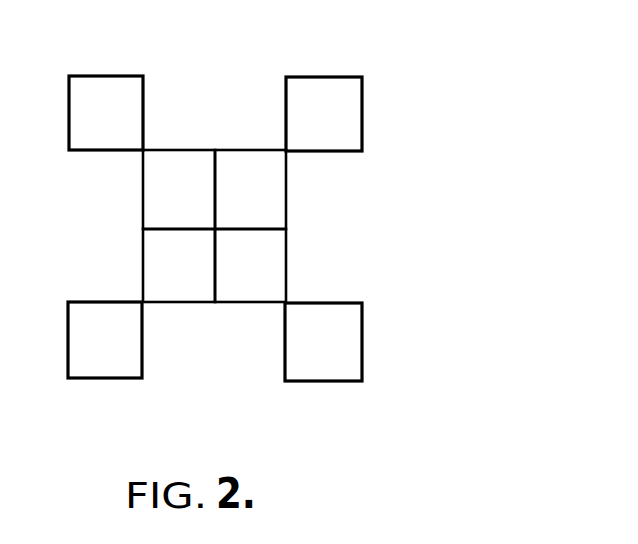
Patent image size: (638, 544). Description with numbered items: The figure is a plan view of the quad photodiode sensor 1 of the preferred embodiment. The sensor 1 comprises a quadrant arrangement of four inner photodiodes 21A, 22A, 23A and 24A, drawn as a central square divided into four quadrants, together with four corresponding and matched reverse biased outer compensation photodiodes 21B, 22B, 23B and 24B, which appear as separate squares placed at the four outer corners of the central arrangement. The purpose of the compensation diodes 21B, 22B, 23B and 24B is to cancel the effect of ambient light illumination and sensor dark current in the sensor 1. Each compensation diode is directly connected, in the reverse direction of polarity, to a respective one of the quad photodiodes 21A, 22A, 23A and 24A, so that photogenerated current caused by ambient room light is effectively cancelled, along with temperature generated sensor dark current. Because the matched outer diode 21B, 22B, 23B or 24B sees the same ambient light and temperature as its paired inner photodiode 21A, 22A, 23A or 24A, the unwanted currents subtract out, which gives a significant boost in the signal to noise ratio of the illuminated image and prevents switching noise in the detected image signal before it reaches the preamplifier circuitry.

The sensor 1 is at (245, 228).
The inner photodiode 21A is at (270, 209).
The inner photodiode 22A is at (199, 209).
The inner photodiode 23A is at (200, 279).
The inner photodiode 24A is at (272, 280).
The outer compensation photodiode 21B is at (342, 136).
The outer compensation photodiode 22B is at (125, 132).
The outer compensation photodiode 23B is at (123, 360).
The outer compensation photodiode 24B is at (338, 362).